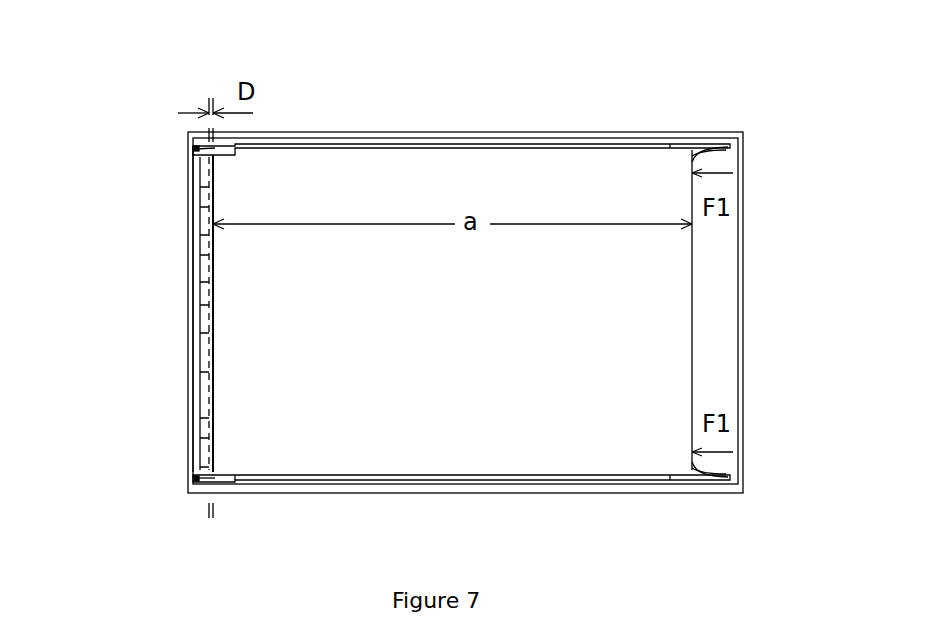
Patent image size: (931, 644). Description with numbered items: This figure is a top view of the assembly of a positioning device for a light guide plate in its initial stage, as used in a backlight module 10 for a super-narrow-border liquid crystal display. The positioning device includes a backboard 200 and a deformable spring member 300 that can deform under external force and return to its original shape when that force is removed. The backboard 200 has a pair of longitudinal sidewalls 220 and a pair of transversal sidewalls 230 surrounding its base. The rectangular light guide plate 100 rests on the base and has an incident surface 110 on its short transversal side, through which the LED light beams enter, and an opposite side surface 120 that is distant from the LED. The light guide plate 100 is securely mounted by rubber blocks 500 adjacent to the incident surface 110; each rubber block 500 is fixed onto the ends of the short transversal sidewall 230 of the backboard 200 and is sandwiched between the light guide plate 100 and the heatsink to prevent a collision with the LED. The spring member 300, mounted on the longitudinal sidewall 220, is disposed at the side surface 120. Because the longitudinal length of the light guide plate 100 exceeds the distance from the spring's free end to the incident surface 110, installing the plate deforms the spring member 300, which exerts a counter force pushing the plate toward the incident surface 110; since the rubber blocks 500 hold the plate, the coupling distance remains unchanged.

The backlight module 10 is at (173, 132).
The light guide plate 100 is at (522, 168).
The incident surface 110 is at (213, 305).
The side surface 120 is at (692, 312).
The backboard 200 is at (745, 133).
The longitudinal sidewalls 220 is at (348, 142).
The transversal sidewalls 230 is at (190, 302).
The spring member 300 is at (723, 147).
The rubber block 500 is at (196, 148).